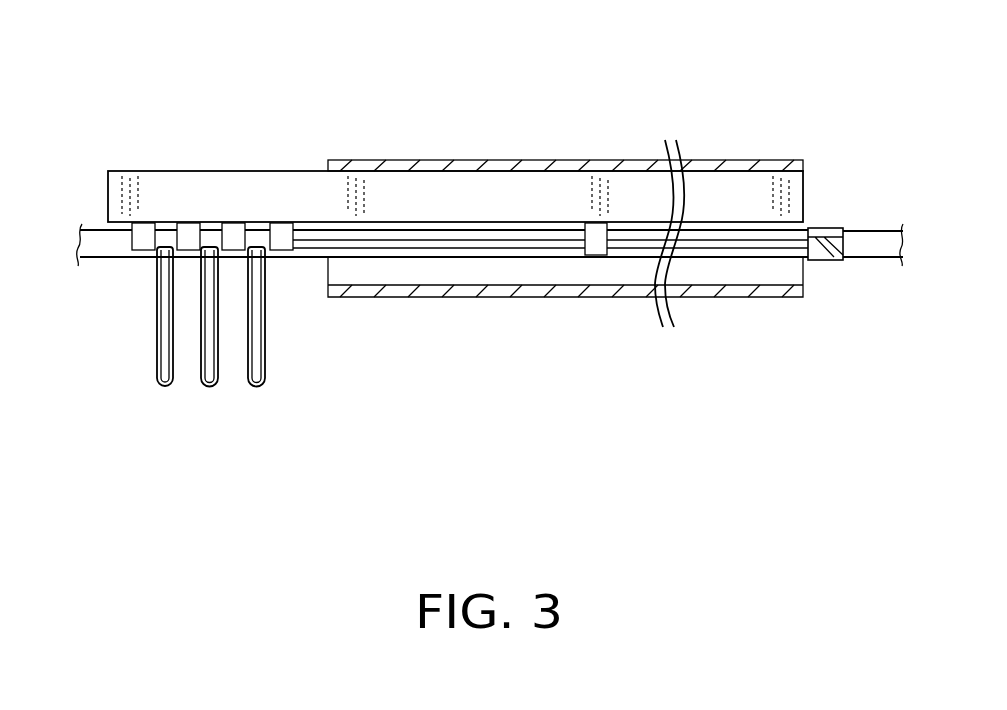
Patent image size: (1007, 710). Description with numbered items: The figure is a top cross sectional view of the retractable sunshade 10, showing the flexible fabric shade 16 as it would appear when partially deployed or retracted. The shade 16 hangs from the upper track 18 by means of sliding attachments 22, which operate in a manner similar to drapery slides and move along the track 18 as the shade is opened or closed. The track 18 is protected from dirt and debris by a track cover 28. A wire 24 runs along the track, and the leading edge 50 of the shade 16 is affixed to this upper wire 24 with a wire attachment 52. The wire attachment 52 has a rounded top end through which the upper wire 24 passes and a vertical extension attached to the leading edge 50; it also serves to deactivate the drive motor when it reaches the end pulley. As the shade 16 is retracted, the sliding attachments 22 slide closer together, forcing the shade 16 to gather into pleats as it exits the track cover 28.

The retractable sunshade 10 is at (415, 100).
The flexible fabric shade 16 is at (259, 352).
The upper track 18 is at (168, 181).
The sliding attachments 22 is at (237, 235).
The wire 24 is at (883, 249).
The track cover 28 is at (527, 160).
The leading edge 50 is at (733, 246).
The wire attachment 52 is at (822, 261).